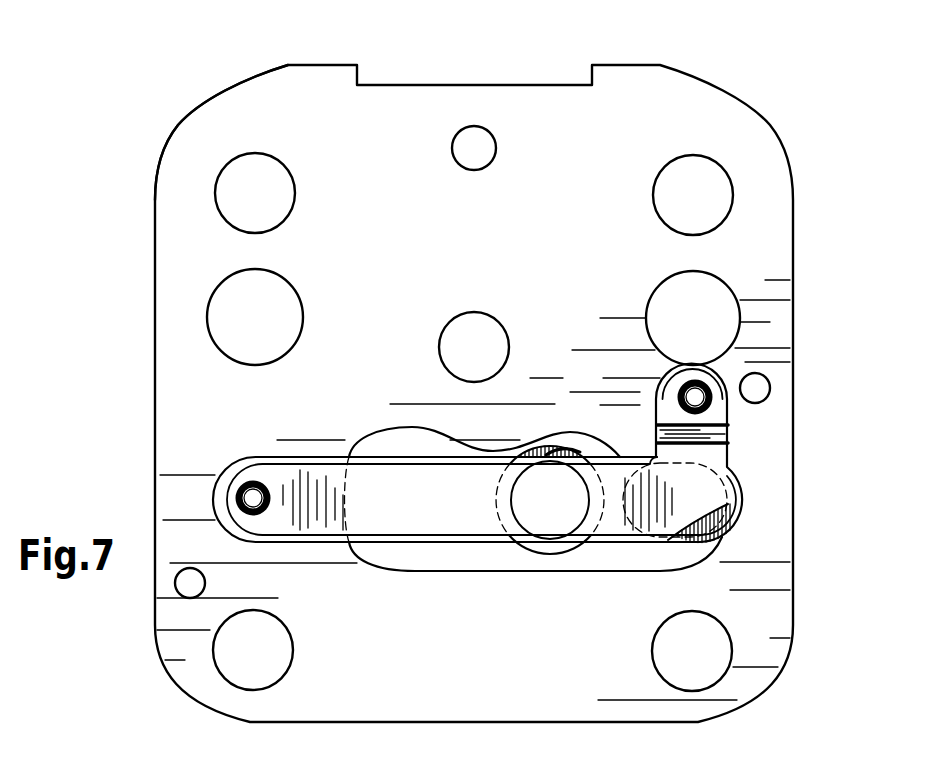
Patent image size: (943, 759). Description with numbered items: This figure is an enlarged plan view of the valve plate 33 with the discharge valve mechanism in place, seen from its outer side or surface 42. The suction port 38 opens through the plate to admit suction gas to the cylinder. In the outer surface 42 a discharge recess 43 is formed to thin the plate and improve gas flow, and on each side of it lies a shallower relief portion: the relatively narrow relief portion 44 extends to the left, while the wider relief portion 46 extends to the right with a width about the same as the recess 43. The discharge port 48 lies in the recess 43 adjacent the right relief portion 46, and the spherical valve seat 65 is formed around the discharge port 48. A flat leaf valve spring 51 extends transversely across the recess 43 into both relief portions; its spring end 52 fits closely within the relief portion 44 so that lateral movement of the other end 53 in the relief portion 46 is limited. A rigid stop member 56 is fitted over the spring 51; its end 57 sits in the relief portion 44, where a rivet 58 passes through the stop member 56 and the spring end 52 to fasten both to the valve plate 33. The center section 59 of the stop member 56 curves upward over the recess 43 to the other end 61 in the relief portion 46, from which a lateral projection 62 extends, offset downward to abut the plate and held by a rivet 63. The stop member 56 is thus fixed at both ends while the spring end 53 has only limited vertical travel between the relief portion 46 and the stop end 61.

The valve plate 33 is at (648, 85).
The outer side or surface 42 is at (310, 95).
The suction port 38 is at (470, 313).
The spring end 52 is at (222, 472).
The stop member 56 is at (461, 519).
The rivet 58 is at (253, 490).
The end of stop member 57 is at (243, 517).
The lateral projection 62 is at (707, 407).
The rivet 63 is at (695, 397).
The leaf valve spring 51 is at (402, 467).
The discharge recess 43 is at (463, 555).
The relief portion 44 is at (282, 542).
The valve seat 65 is at (558, 547).
The center section 59 is at (497, 527).
The discharge port 48 is at (573, 452).
The spring end 53 is at (728, 500).
The relief portion 46 is at (728, 532).
The end of stop member 61 is at (685, 498).